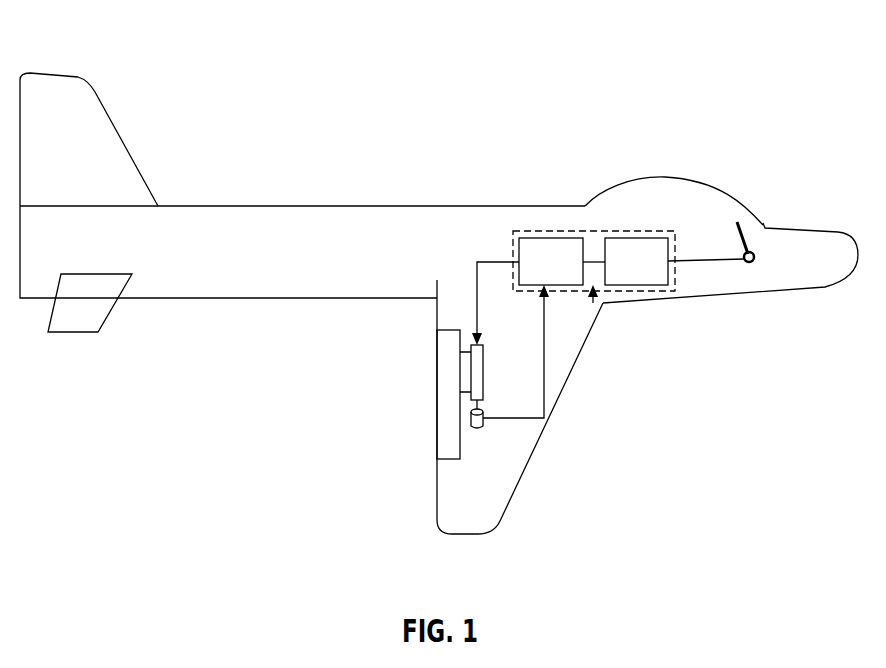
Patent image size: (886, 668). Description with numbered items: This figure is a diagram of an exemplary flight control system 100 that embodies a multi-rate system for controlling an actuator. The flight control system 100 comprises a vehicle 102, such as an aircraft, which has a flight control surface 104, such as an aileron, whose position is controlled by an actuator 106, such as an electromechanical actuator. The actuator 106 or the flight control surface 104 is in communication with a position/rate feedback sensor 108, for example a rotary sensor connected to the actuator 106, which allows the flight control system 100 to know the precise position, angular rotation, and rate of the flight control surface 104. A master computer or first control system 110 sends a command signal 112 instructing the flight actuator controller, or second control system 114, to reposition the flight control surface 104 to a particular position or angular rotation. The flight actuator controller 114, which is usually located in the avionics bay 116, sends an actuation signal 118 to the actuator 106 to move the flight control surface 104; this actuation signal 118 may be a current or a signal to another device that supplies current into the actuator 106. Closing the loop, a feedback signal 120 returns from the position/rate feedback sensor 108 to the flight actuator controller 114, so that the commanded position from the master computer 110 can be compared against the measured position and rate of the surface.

The flight control system 100 is at (712, 52).
The vehicle 102 is at (514, 130).
The flight control surface 104 is at (447, 338).
The actuator 106 is at (458, 373).
The position/rate feedback sensor 108 is at (477, 429).
The master computer or first control system 110 is at (657, 238).
The command signal 112 is at (593, 262).
The flight actuator controller (FAC) or second control system 114 is at (528, 232).
The avionics bay 116 is at (595, 292).
The actuation signal 118 is at (490, 262).
The feedback signal 120 is at (544, 378).